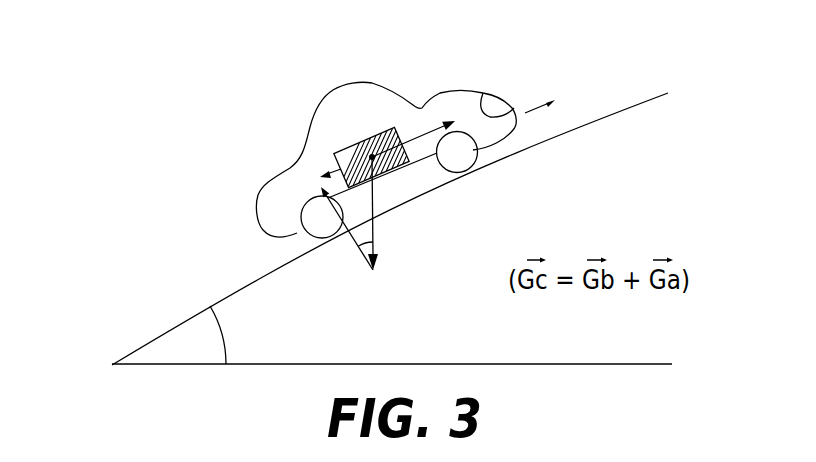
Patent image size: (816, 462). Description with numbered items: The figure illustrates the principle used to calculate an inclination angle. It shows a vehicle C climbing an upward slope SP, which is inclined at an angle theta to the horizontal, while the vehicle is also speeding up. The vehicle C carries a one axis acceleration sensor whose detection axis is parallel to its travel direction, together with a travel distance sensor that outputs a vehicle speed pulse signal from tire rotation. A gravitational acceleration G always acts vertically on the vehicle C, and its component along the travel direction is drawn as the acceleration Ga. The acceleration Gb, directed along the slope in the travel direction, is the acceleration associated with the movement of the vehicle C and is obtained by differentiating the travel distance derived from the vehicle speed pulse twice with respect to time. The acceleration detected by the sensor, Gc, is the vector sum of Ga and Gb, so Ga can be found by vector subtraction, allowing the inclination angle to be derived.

The vehicle C is at (375, 82).
The inclination (acceleration) sensor I is at (358, 146).
The upward slope SP is at (218, 298).
The gravitational acceleration G is at (376, 230).
The acceleration Ga is at (334, 173).
The acceleration Gb is at (427, 137).
The acceleration Gc is at (377, 202).